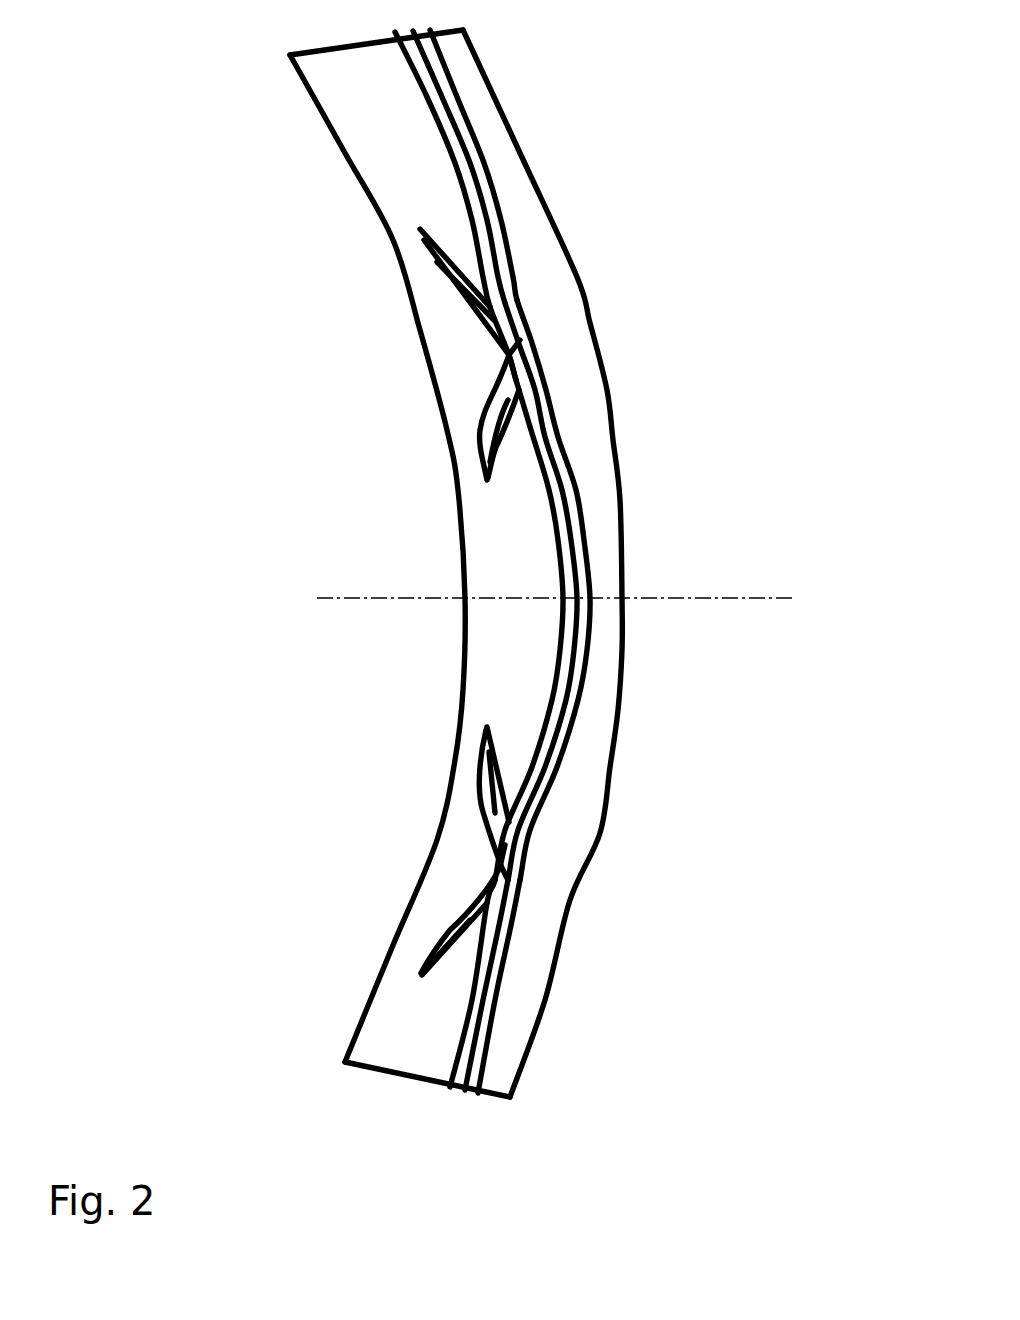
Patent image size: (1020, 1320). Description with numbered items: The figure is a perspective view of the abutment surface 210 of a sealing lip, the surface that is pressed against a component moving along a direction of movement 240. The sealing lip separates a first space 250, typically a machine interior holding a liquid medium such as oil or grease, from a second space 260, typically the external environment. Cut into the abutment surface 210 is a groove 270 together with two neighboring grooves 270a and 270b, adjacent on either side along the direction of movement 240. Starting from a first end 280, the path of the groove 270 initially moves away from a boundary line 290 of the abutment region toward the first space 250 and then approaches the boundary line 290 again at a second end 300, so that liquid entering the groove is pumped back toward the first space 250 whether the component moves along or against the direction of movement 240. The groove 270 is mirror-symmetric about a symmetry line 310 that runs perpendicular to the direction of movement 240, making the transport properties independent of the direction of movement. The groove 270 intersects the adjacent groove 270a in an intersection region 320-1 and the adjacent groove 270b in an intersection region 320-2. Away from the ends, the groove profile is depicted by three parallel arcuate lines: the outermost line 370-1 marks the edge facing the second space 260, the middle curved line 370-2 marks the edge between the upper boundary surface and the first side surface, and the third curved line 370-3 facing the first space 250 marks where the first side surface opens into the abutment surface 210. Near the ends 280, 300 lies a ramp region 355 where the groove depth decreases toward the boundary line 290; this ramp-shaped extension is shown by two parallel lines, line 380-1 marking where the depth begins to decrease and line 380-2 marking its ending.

The abutment surface 210 is at (613, 438).
The direction of movement 240 is at (166, 655).
The first space 250 is at (370, 678).
The second space 260 is at (730, 572).
The groove 270 is at (639, 590).
The groove 270a is at (493, 995).
The groove 270b is at (487, 147).
The first end 280 is at (427, 282).
The boundary line 290 is at (433, 382).
The second end 300 is at (418, 958).
The symmetry line 310 is at (340, 598).
The intersection region 320-1 is at (528, 872).
The intersection region 320-2 is at (533, 335).
The ramp region 355 is at (410, 259).
The outermost line 370-1 is at (547, 810).
The middle curved line 370-2 is at (557, 768).
The third curved line 370-3 is at (550, 735).
The line 380-1 is at (483, 807).
The line 380-2 is at (482, 752).